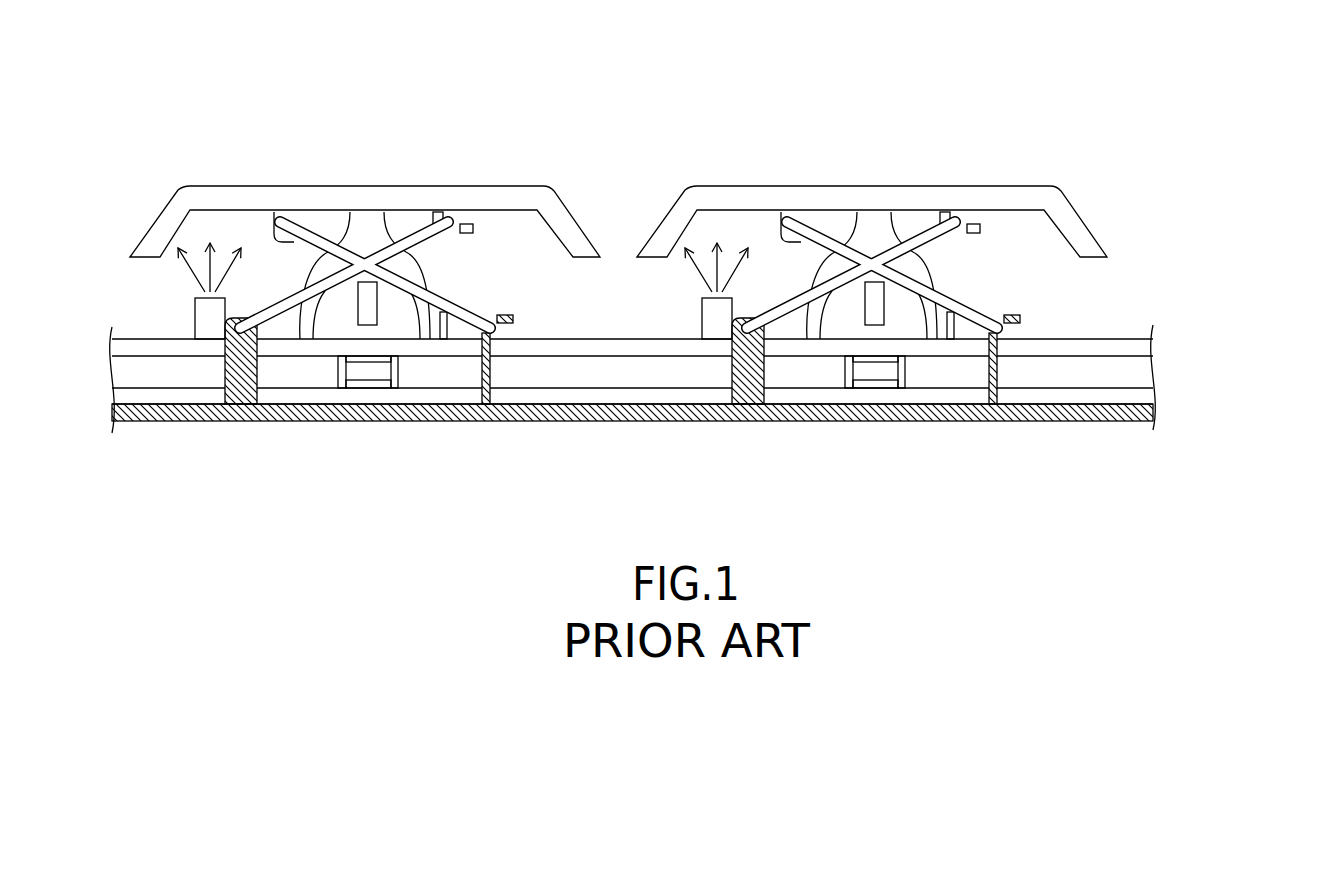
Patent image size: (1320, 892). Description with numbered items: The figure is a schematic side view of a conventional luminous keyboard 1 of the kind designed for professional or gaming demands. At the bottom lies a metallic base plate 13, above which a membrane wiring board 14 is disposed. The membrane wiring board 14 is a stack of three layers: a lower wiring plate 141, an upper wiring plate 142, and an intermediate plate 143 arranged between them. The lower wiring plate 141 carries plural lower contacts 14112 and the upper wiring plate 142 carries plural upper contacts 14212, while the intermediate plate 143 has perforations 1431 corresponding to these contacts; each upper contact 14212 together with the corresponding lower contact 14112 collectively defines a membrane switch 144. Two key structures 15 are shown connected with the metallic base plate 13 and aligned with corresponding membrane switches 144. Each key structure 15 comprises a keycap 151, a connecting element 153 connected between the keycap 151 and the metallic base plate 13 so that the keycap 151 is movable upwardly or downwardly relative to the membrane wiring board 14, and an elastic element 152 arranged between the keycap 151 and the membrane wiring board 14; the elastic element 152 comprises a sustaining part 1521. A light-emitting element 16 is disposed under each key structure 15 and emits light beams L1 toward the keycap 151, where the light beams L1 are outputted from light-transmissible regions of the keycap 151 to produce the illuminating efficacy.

The luminous keyboard 1 is at (1042, 85).
The metallic base plate 13 is at (1054, 413).
The membrane wiring board 14 is at (691, 404).
The lower wiring plate 141 is at (1135, 395).
The upper wiring plate 142 is at (1118, 342).
The intermediate plate 143 is at (1123, 375).
The membrane switch 144 is at (660, 441).
The upper contact 14212 is at (870, 360).
The lower contact 14112 is at (873, 386).
The perforation 1431 is at (755, 478).
The key structure 15 is at (618, 299).
The keycap 151 is at (516, 185).
The elastic element 152 is at (364, 240).
The sustaining part 1521 is at (927, 293).
The connecting element 153 is at (420, 295).
The light-emitting element 16 is at (207, 325).
The light beams L1 is at (466, 257).